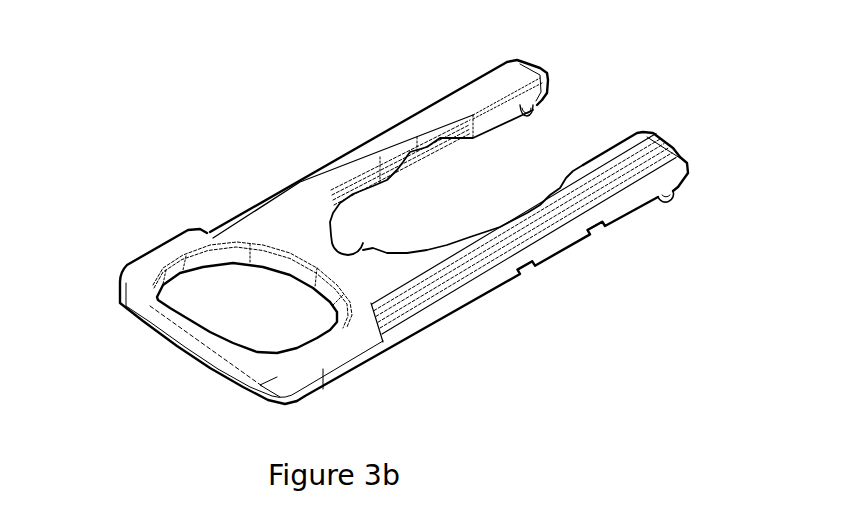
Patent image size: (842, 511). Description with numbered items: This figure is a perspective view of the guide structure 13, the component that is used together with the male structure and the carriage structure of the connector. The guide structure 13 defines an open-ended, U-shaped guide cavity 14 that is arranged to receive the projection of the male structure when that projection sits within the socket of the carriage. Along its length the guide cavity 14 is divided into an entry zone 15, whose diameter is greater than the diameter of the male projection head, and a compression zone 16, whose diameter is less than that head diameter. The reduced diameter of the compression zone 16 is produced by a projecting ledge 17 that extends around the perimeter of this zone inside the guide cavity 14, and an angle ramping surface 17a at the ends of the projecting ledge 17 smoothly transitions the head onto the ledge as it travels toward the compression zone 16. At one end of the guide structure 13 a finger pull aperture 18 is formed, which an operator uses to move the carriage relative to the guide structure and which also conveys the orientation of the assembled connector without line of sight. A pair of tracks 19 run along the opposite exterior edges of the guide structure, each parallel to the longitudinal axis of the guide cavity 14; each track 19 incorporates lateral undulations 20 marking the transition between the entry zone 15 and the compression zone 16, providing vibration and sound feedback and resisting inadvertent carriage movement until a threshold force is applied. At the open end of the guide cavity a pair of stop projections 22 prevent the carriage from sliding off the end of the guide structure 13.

The guide structure 13 is at (133, 203).
The guide cavity 14 is at (562, 133).
The entry zone 15 is at (492, 197).
The compression zone 16 is at (397, 237).
The projecting ledge 17 is at (333, 203).
The angle ramping surface 17a is at (388, 173).
The finger pull aperture 18 is at (213, 313).
The track 19 is at (407, 108).
The lateral undulations 20 is at (548, 280).
The stop projections 22 is at (513, 112).